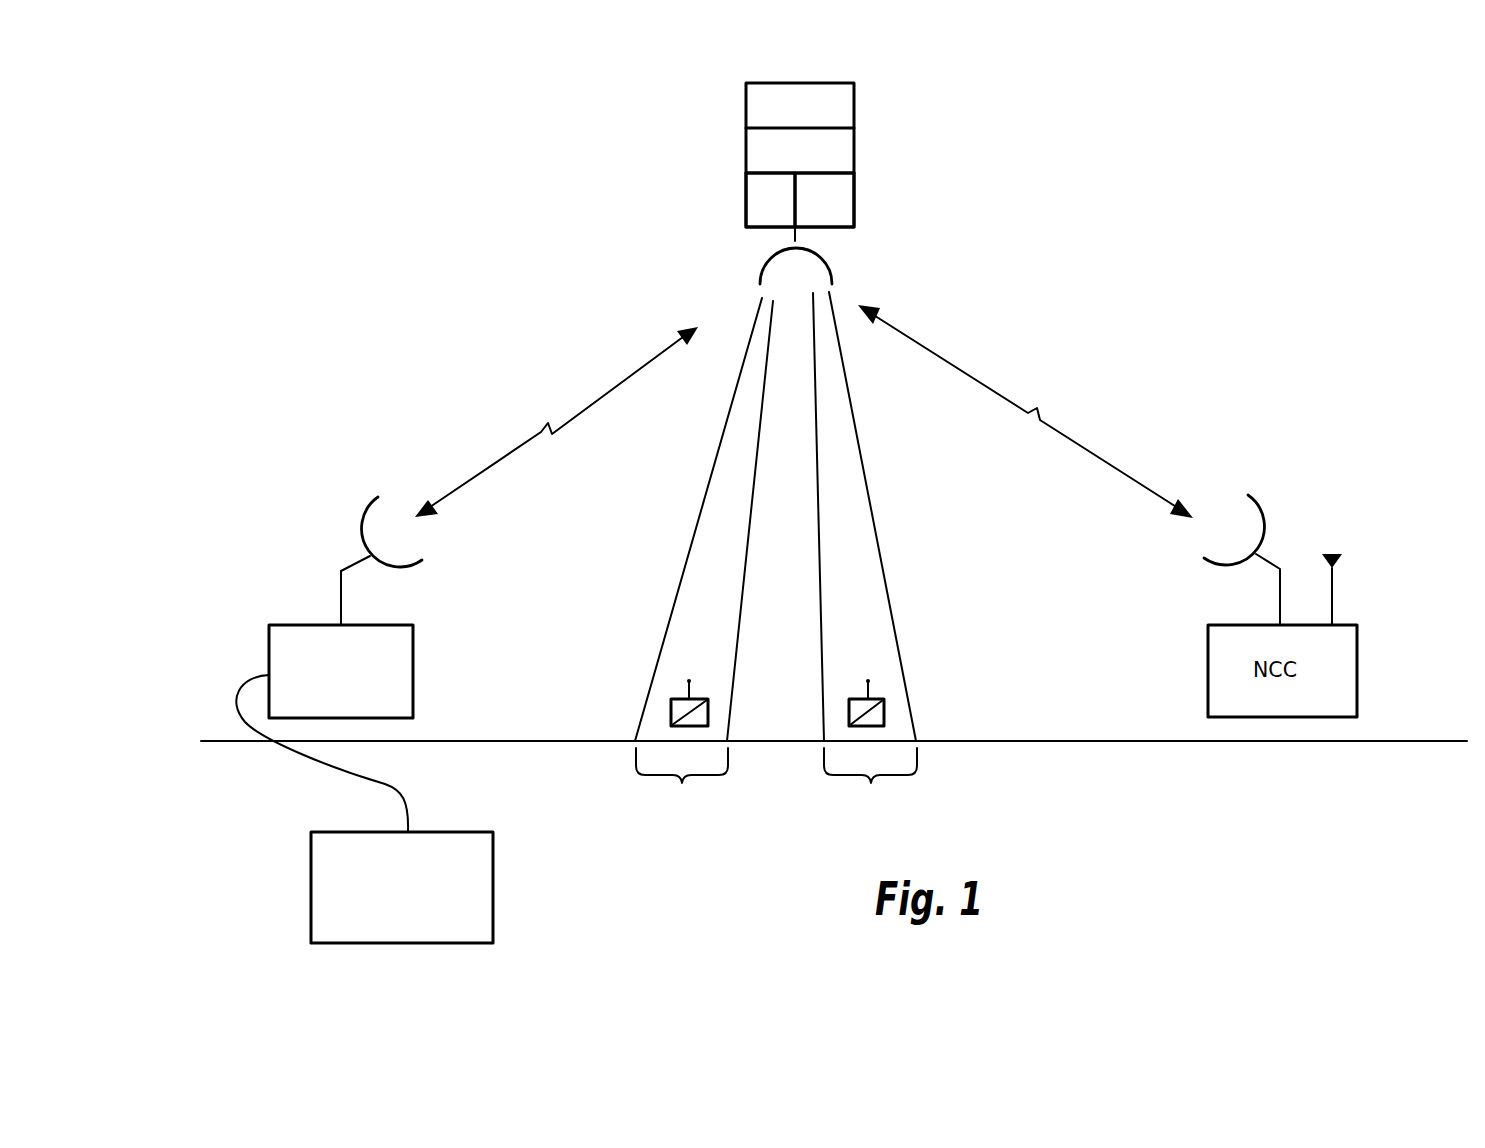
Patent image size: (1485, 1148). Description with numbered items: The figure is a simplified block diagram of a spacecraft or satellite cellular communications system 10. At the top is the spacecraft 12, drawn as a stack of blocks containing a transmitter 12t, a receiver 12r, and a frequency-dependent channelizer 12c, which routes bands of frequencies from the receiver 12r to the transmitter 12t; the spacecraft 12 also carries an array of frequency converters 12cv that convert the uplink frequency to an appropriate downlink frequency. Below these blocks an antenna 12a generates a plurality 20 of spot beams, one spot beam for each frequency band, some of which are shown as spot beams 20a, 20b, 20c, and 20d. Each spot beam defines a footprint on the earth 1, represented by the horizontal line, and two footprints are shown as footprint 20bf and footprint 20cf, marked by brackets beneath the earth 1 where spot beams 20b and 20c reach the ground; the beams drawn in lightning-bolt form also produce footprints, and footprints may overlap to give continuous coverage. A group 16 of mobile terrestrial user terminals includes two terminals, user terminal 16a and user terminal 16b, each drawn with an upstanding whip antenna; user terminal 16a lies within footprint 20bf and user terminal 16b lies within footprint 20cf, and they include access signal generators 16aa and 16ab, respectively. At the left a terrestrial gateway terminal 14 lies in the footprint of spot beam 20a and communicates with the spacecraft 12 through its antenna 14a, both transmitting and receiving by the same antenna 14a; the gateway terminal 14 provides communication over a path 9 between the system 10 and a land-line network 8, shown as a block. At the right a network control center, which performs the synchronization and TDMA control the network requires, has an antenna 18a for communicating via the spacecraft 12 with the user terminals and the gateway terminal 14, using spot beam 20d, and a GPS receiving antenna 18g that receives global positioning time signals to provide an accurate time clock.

The earth 1 is at (1040, 743).
The land-line network 8 is at (493, 884).
The path 9 is at (408, 806).
The spacecraft cellular communications system 10 is at (1208, 296).
The spacecraft 12 is at (955, 178).
The frequency converters 12cv is at (854, 107).
The frequency-dependent channelizer 12c is at (746, 152).
The transmitter 12t is at (746, 201).
The receiver 12r is at (854, 201).
The antenna 12a is at (832, 283).
The gateway terminal 14 is at (413, 678).
The antenna 14a is at (368, 512).
The group of mobile terrestrial user terminals 16 is at (617, 644).
The mobile user terminal 16a is at (671, 712).
The access signal generator 16aa is at (708, 713).
The mobile user terminal 16b is at (884, 713).
The access signal generator 16ab is at (849, 700).
The antenna 18a is at (1250, 506).
The GPS receiving antenna 18g is at (1341, 561).
The plurality of spot beams 20 is at (612, 337).
The spot beam 20a is at (541, 428).
The spot beam 20b is at (701, 517).
The spot beam 20c is at (874, 521).
The spot beam 20d is at (1068, 435).
The spot beam footprint 20bf is at (682, 783).
The spot beam footprint 20cf is at (871, 783).